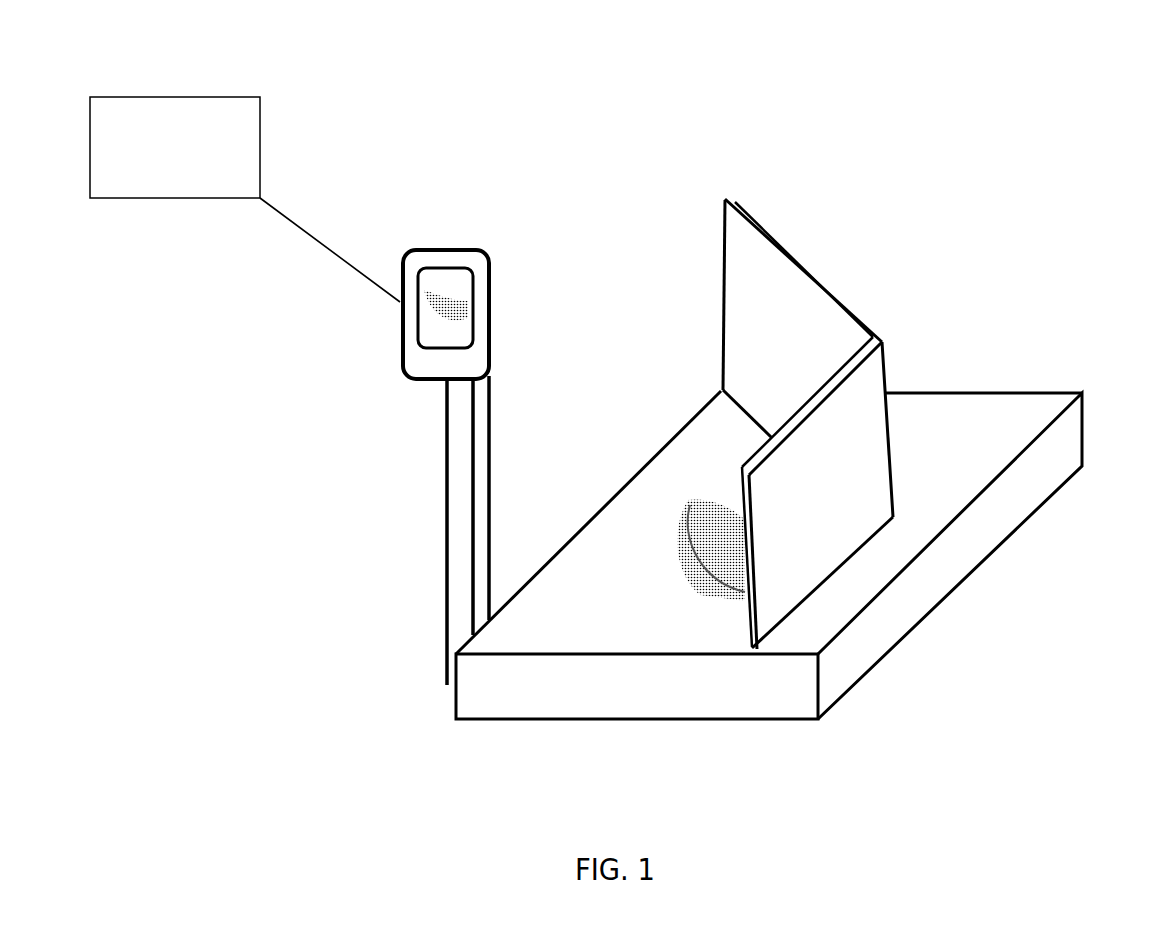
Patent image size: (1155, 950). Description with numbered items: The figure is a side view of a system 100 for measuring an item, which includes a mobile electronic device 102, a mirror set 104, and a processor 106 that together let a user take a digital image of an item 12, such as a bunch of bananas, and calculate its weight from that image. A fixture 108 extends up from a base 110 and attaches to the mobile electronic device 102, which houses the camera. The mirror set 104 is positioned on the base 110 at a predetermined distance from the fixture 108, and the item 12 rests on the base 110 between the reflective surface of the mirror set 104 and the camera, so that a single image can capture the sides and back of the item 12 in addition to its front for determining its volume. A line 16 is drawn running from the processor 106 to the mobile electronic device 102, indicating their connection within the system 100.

The system 100 is at (1000, 74).
The mobile electronic device 102 is at (457, 243).
The mirror set 104 is at (760, 325).
The processor 106 is at (158, 186).
The fixture 108 is at (425, 438).
The base 110 is at (635, 717).
The item 12 is at (693, 505).
The connection line 16 is at (317, 243).